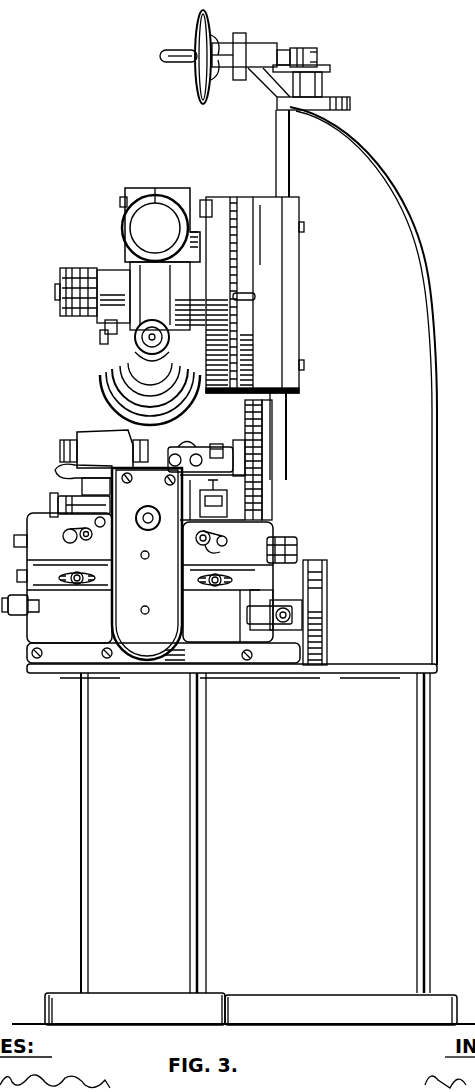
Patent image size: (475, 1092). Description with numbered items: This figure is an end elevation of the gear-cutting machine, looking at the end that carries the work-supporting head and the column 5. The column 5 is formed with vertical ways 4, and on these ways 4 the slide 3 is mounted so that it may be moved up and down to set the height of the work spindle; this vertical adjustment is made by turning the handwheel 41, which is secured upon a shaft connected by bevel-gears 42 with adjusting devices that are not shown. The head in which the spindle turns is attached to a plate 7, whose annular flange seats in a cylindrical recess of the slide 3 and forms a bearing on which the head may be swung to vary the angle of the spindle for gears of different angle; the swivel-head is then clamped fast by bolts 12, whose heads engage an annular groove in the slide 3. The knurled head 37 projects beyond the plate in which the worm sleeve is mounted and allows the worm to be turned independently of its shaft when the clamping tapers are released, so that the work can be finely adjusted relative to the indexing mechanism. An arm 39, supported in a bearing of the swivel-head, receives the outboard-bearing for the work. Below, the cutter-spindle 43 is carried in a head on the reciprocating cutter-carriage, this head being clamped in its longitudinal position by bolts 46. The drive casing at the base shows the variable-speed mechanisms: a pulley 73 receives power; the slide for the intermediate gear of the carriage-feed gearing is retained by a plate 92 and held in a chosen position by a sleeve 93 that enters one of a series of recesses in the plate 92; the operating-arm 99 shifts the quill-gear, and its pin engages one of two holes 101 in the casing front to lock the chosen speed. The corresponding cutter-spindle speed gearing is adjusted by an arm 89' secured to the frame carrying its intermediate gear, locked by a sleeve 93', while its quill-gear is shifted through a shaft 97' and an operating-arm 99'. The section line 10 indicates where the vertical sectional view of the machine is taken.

The slide 3 is at (273, 310).
The ways 4 is at (282, 148).
The column 5 is at (380, 178).
The plate 7 is at (234, 205).
The section line 10 10 is at (160, 200).
The bolts 12 is at (205, 204).
The knurled head 37 is at (80, 270).
The arm 39 is at (143, 226).
The handwheel 41 is at (203, 20).
The bevel-gears 42 is at (296, 60).
The cutter-spindle 43 is at (170, 439).
The bolts 46 is at (212, 444).
The pulley 73 is at (327, 590).
The arm 89' is at (277, 602).
The plate 92 is at (288, 540).
The sleeve 93 is at (77, 594).
The sleeve 93' is at (217, 597).
The shaft 97' is at (222, 555).
The operating-arm 99 is at (66, 529).
The operating-arm 99' is at (231, 533).
The holes 101 is at (103, 538).